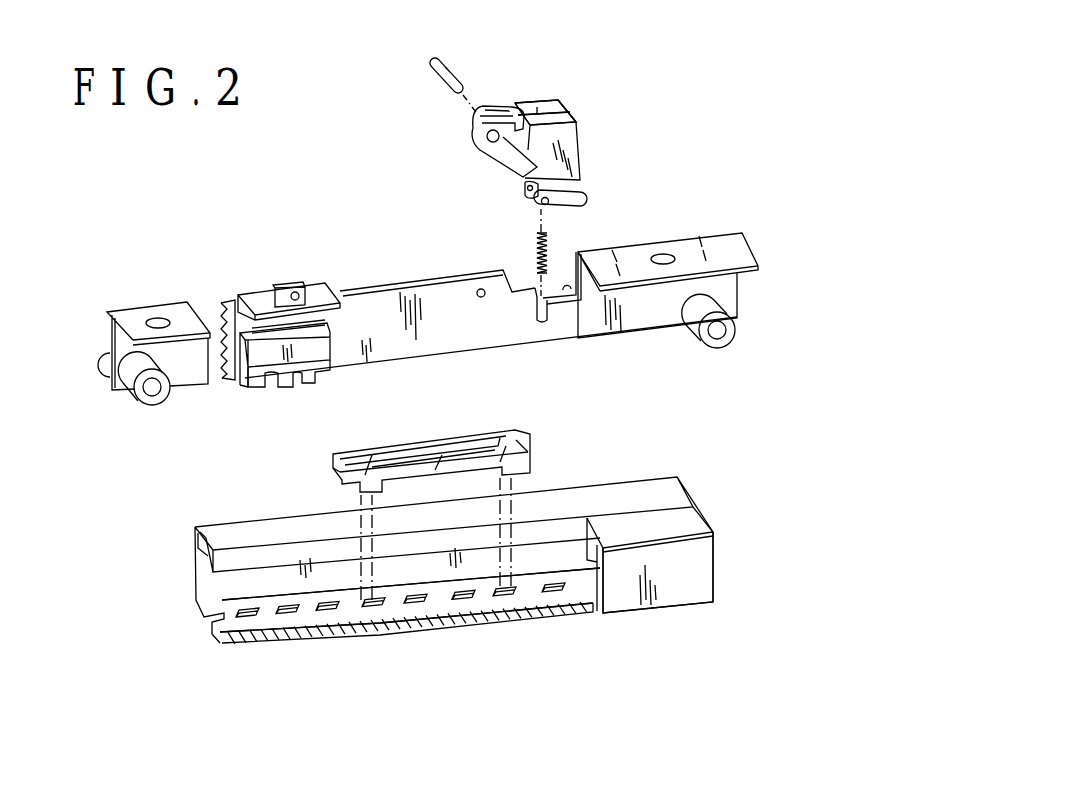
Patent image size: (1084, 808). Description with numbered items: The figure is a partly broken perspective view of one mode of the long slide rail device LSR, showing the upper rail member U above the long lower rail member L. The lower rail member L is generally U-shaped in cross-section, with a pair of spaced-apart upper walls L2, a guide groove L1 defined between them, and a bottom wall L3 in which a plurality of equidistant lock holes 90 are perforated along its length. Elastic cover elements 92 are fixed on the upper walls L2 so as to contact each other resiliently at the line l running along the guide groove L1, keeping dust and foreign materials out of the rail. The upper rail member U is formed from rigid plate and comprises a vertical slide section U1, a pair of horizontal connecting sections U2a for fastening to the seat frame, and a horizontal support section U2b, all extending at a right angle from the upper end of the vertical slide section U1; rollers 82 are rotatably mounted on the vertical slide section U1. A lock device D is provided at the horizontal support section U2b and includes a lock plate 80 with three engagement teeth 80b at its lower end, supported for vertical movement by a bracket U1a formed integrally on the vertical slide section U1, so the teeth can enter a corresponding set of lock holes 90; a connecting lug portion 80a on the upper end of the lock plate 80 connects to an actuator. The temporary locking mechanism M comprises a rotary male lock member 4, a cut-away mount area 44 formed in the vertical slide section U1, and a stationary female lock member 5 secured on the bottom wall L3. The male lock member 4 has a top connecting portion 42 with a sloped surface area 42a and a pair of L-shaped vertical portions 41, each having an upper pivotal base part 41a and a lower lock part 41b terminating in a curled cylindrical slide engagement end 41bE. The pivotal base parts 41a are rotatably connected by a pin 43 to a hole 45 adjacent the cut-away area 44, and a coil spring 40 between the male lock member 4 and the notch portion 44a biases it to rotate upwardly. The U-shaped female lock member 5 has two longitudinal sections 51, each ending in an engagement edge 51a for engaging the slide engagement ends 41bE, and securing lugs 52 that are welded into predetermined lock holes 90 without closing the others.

The rotary male lock member 4 is at (584, 156).
The coil spring 40 is at (552, 248).
The L-shaped vertical portion 41 is at (472, 129).
The upper pivotal base part 41a is at (502, 112).
The lower lock part 41b is at (582, 181).
The cylindrical slide engagement end 41bE is at (584, 206).
The top connecting portion 42 is at (556, 102).
The sloped surface area 42a is at (575, 116).
The pin 43 is at (442, 78).
The cut-away mount area 44 is at (578, 302).
The notch portion 44a is at (542, 322).
The hole 45 is at (478, 290).
The stationary female lock member 5 is at (330, 466).
The longitudinal section 51 is at (440, 468).
The engagement edge 51a is at (521, 441).
The securing lug 52 is at (368, 470).
The lock plate 80 is at (343, 300).
The connecting lug portion 80a is at (300, 283).
The engagement teeth 80b is at (308, 386).
The roller 82 is at (100, 378).
The lock hole 90 is at (295, 613).
The elastic cover element 92 is at (680, 493).
The upper rail member U is at (767, 392).
The vertical slide section U1 is at (402, 345).
The bracket U1a is at (250, 383).
The horizontal connecting section U2a is at (127, 298).
The horizontal support section U2b is at (254, 293).
The long lower rail member L is at (764, 504).
The guide groove L1 is at (245, 567).
The upper wall L2 is at (197, 568).
The bottom wall L3 is at (442, 607).
The long slide rail device LSR is at (829, 412).
The lock device D is at (280, 226).
The temporary locking mechanism M is at (751, 73).
The line l is at (630, 512).